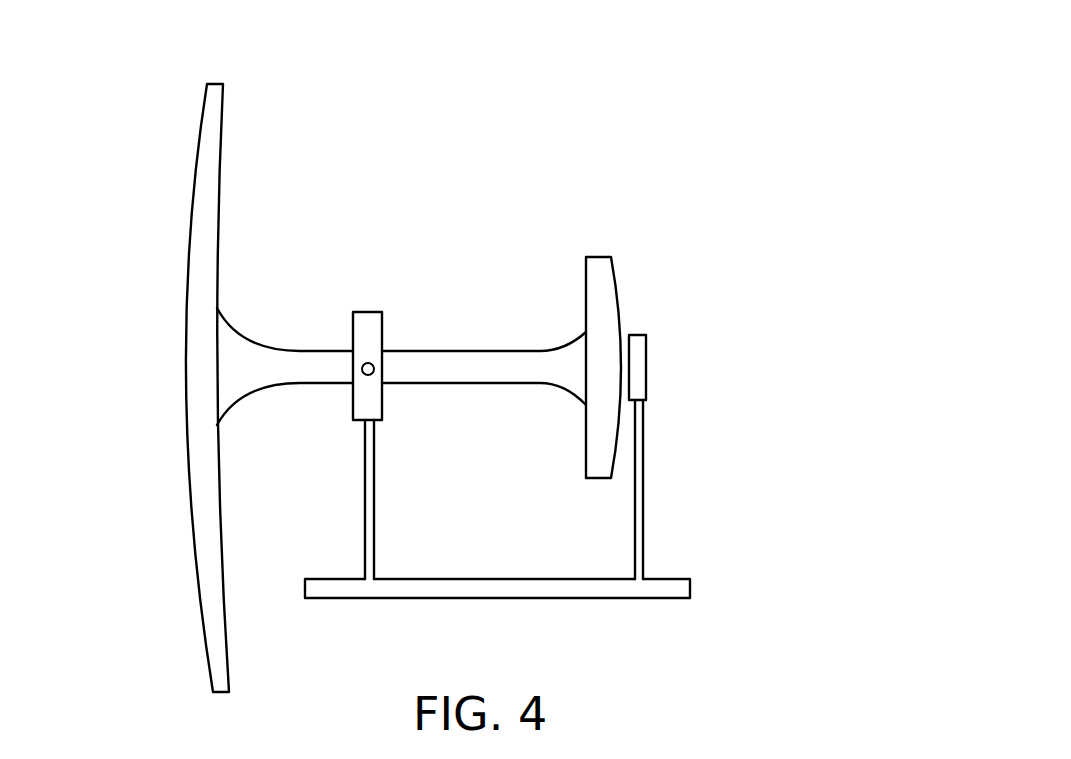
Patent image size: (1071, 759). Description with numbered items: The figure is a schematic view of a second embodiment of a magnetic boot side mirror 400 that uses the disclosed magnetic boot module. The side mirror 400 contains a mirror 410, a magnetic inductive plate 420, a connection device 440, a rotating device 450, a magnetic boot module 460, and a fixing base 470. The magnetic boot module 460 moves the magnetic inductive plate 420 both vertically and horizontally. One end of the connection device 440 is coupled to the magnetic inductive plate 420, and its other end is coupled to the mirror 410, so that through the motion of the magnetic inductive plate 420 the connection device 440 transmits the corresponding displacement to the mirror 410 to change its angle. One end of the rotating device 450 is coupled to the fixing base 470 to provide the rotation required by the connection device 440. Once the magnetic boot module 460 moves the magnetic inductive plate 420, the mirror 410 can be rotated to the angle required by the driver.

The side mirror 400 is at (602, 115).
The mirror 410 is at (190, 240).
The magnetic inductive plate 420 is at (616, 285).
The connection device 440 is at (440, 351).
The rotating device 450 is at (366, 312).
The magnetic boot module 460 is at (647, 366).
The fixing base 470 is at (691, 585).